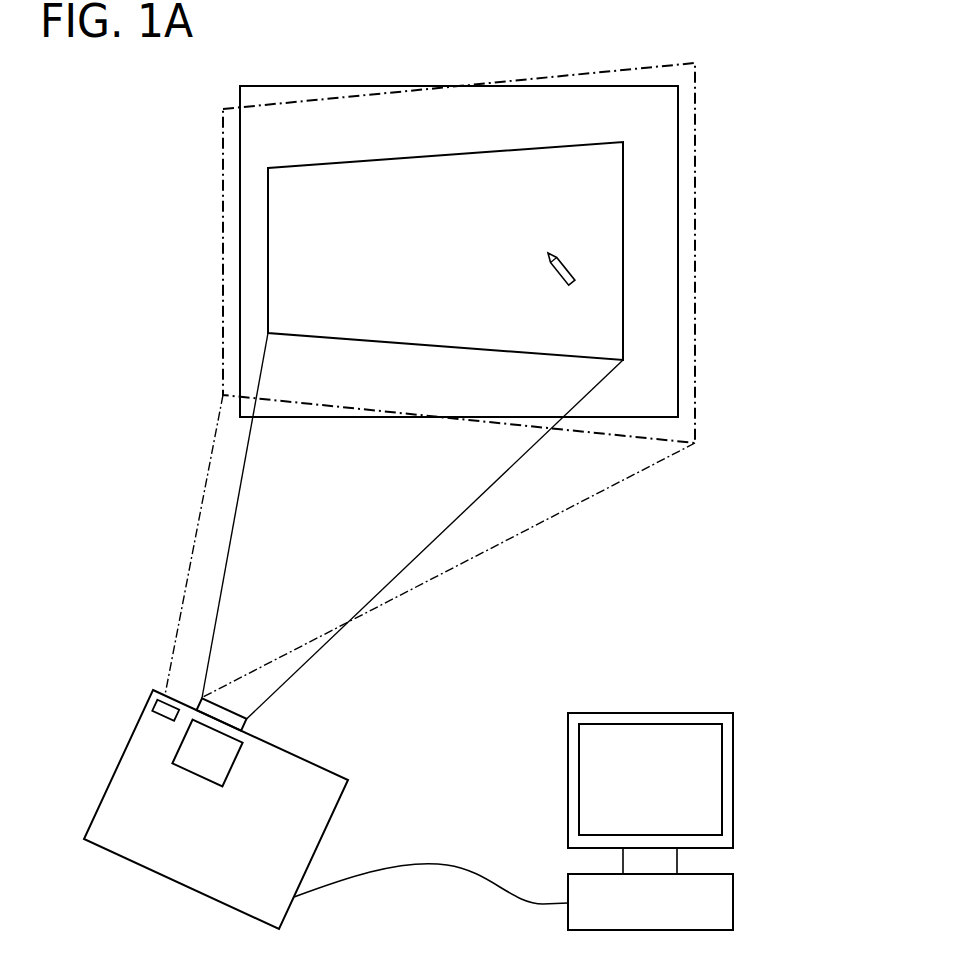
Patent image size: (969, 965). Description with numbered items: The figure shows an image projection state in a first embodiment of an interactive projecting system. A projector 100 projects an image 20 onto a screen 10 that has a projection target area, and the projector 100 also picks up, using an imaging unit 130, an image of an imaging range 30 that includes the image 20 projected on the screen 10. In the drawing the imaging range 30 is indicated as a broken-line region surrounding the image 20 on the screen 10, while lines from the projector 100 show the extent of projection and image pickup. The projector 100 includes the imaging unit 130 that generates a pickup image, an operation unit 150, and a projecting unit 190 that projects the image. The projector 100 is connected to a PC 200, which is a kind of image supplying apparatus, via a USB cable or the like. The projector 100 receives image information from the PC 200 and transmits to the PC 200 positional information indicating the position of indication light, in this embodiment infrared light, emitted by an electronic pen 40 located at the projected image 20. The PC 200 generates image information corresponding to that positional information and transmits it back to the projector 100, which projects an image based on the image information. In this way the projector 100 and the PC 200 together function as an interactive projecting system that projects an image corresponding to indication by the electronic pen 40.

The screen 10 is at (311, 69).
The image 20 is at (528, 148).
The imaging range 30 is at (680, 63).
The electronic pen 40 is at (568, 266).
The projector 100 is at (338, 778).
The imaging unit 130 is at (167, 717).
The operation unit 150 is at (228, 779).
The projecting unit 190 is at (245, 725).
The PC 200 is at (733, 905).